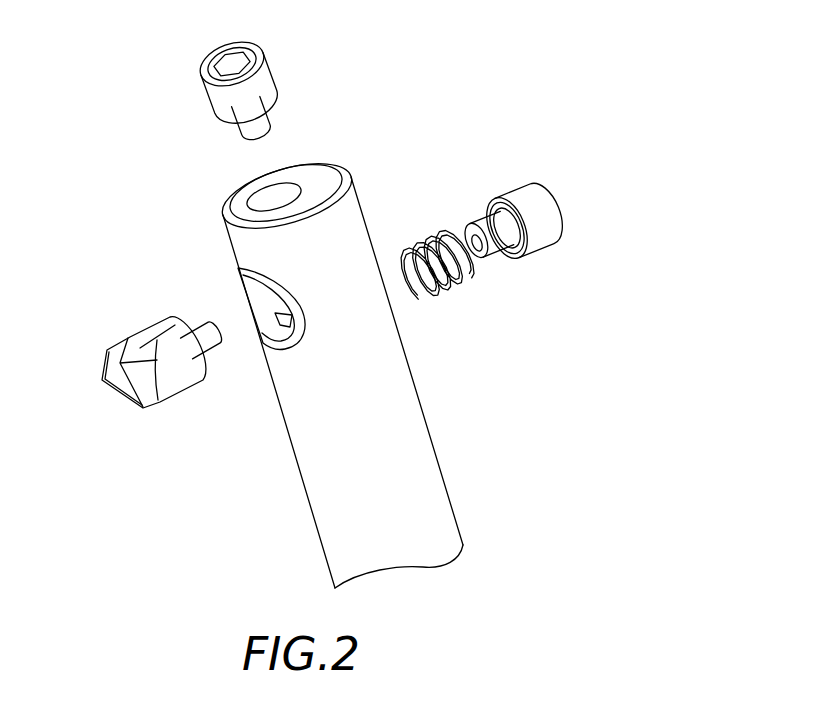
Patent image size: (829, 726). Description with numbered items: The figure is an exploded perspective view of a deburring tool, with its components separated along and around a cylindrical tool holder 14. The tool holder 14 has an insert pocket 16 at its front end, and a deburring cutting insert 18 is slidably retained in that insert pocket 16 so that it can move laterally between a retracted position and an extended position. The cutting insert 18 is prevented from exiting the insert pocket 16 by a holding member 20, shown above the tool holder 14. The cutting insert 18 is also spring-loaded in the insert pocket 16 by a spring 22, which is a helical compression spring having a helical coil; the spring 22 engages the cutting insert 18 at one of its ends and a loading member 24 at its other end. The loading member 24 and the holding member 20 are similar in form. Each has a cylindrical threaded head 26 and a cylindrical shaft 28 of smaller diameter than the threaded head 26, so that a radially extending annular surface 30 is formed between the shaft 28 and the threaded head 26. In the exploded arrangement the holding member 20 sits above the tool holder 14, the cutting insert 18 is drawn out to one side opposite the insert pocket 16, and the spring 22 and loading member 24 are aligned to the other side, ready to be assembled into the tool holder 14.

The tool holder 14 is at (453, 440).
The insert pocket 16 is at (255, 325).
The deburring cutting insert 18 is at (106, 404).
The holding member 20 is at (209, 96).
The spring 22 is at (410, 258).
The loading member 24 is at (552, 228).
The threaded head 26 is at (256, 83).
The shaft 28 is at (477, 218).
The annular surface 30 is at (505, 260).